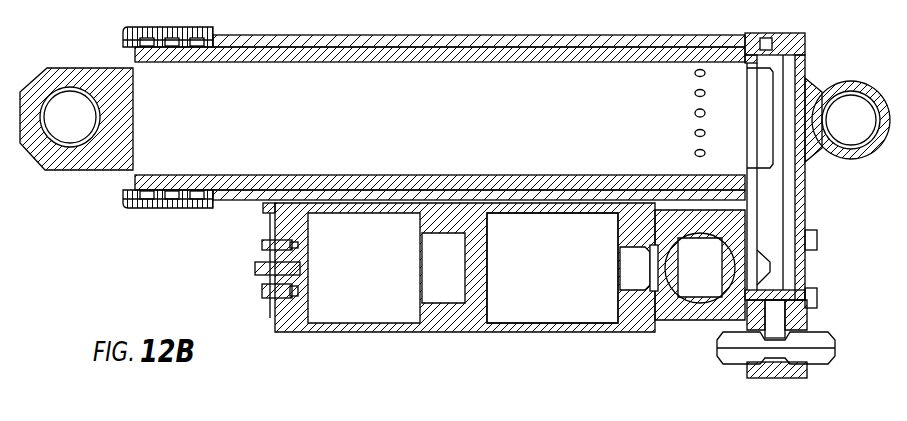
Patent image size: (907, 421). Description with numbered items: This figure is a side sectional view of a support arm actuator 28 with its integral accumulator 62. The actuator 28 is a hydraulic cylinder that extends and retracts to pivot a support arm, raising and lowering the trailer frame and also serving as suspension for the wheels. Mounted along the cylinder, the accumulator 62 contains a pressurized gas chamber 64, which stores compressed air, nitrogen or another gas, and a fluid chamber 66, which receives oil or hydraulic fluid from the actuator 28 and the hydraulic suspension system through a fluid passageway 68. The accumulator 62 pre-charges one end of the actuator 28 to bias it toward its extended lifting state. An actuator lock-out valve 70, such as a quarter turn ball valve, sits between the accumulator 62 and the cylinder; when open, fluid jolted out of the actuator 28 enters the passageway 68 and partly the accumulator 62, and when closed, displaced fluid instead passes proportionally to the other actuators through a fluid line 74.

The support arm actuator 28 is at (180, 208).
The accumulator 62 is at (292, 333).
The pressurized gas chamber 64 is at (395, 313).
The fluid chamber 66 is at (545, 300).
The fluid passageway 68 is at (773, 185).
The actuator lock-out valve 70 is at (680, 313).
The fluid line 74 is at (825, 335).